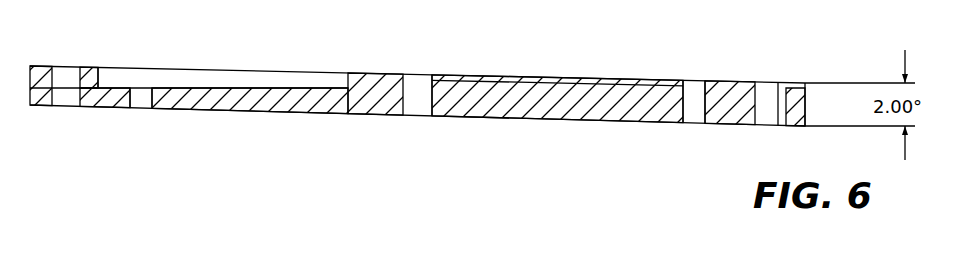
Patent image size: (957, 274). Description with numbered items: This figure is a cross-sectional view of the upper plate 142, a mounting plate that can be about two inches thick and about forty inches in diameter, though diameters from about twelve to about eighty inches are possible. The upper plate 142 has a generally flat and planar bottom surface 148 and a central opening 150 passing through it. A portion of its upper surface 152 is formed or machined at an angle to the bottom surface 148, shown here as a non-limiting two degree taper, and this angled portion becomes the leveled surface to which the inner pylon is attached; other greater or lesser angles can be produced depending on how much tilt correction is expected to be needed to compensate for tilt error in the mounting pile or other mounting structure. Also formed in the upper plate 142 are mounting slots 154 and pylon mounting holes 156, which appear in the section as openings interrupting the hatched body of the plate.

The upper plate 142 is at (546, 135).
The bottom surface 148 is at (305, 113).
The central opening 150 is at (430, 90).
The upper surface 152 is at (218, 72).
The mounting slots 154 is at (778, 98).
The pylon mounting holes 156 is at (705, 99).